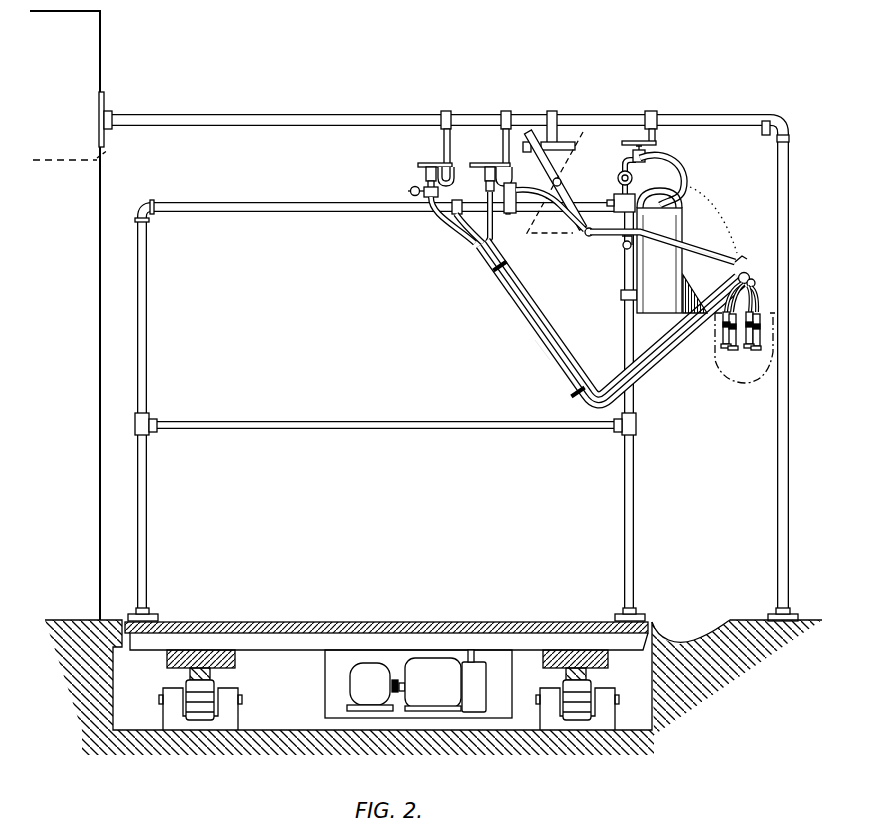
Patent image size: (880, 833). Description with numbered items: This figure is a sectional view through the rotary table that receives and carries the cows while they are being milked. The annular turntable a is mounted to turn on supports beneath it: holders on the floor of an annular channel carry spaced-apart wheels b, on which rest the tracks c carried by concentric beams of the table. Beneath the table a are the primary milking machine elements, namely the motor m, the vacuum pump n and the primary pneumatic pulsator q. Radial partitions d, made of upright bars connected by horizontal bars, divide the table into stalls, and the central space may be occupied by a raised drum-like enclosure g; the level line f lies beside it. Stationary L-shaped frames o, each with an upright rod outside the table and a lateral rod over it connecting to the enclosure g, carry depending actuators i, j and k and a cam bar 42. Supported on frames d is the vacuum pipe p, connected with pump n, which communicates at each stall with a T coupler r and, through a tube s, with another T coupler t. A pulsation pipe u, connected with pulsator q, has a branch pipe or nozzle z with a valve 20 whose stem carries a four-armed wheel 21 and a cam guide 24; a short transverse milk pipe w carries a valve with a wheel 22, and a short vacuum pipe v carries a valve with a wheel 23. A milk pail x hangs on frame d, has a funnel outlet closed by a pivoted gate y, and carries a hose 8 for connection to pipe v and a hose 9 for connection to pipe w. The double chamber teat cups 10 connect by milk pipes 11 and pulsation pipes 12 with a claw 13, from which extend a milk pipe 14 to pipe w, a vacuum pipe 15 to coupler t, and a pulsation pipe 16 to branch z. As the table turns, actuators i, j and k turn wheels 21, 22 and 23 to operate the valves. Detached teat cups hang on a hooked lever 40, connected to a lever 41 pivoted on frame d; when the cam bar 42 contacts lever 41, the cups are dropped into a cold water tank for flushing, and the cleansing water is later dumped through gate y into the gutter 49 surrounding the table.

The drum-like enclosure g is at (101, 33).
The floor level line f is at (79, 154).
The L-shaped frame o is at (265, 116).
The radial partition d is at (205, 211).
The tube s is at (530, 211).
The actuator i is at (448, 111).
The actuator j is at (507, 111).
The actuator k is at (654, 111).
The cam bar 42 is at (553, 143).
The lever 41 is at (584, 230).
The valve 20 is at (428, 168).
The four-armed wheel 21 is at (440, 166).
The cam guide 24 is at (440, 190).
The branch pipe z is at (428, 190).
The pulsation pipe u is at (411, 190).
The T coupler t is at (455, 214).
The wheel 22 is at (490, 166).
The milk pipe w is at (517, 190).
The milk pipe 14 is at (552, 338).
The vacuum pipe 15 is at (572, 356).
The pulsation pipe 16 is at (543, 354).
The vacuum pipe v is at (620, 163).
The vacuum pipe p is at (618, 178).
The T coupler r is at (614, 203).
The wheel 23 is at (635, 150).
The hose 8 is at (682, 170).
The milk pail x is at (684, 214).
The hose 9 is at (602, 237).
The lever 40 is at (728, 259).
The claw 13 is at (752, 277).
The milk pipe 11 is at (762, 300).
The pulsation pipe 12 is at (764, 312).
The teat cup 10 is at (762, 333).
The gate y is at (705, 332).
The gutter 49 is at (686, 636).
The turntable a is at (402, 622).
The wheel b is at (186, 688).
The track c is at (214, 688).
The motor m is at (418, 684).
The vacuum pump n is at (433, 684).
The primary pneumatic pulsator q is at (476, 692).